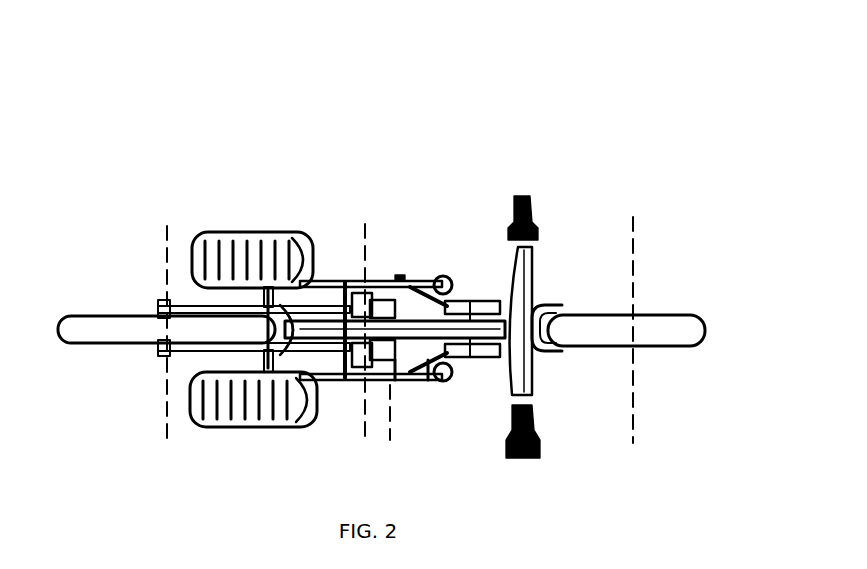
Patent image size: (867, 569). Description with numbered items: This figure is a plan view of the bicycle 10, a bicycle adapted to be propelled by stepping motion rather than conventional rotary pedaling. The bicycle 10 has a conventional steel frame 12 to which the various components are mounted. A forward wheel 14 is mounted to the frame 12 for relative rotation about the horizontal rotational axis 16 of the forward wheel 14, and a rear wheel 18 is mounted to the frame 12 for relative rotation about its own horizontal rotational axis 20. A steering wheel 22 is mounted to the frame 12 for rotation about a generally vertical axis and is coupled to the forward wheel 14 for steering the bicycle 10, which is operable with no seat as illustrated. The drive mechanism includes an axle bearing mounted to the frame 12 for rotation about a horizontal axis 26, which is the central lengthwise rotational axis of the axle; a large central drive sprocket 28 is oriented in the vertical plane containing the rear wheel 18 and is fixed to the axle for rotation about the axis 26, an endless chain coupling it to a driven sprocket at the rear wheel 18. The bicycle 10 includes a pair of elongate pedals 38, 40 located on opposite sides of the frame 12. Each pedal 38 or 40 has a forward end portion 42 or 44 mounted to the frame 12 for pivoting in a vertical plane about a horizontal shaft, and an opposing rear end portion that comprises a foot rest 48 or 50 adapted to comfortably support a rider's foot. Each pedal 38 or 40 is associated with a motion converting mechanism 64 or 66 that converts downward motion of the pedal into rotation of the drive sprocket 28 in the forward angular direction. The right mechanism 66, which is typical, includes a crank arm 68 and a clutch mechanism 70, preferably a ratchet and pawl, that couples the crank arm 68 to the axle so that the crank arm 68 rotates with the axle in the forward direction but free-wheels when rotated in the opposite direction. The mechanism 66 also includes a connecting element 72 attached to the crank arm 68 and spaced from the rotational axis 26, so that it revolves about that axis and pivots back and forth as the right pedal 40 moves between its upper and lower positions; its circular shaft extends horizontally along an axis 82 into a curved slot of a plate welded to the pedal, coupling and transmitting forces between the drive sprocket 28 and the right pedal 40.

The bicycle 10 is at (178, 116).
The frame 12 is at (558, 303).
The forward wheel 14 is at (663, 313).
The rotational axis of the forward wheel 16 is at (633, 220).
The rear wheel 18 is at (101, 314).
The rotational axis of the rear wheel 20 is at (167, 227).
The steering wheel 22 is at (545, 368).
The horizontal axis 26 is at (365, 228).
The central drive sprocket 28 is at (343, 292).
The left pedal 38 is at (252, 218).
The right pedal 40 is at (253, 438).
The forward end portion 42 is at (475, 300).
The forward end portion 44 is at (470, 368).
The foot rest 48 is at (240, 234).
The foot rest 50 is at (238, 426).
The motion converting mechanism 64 is at (408, 268).
The motion converting mechanism 66 is at (352, 402).
The crank arm 68 is at (428, 380).
The clutch mechanism 70 is at (349, 347).
The connecting element 72 is at (394, 385).
The axis 82 is at (392, 438).